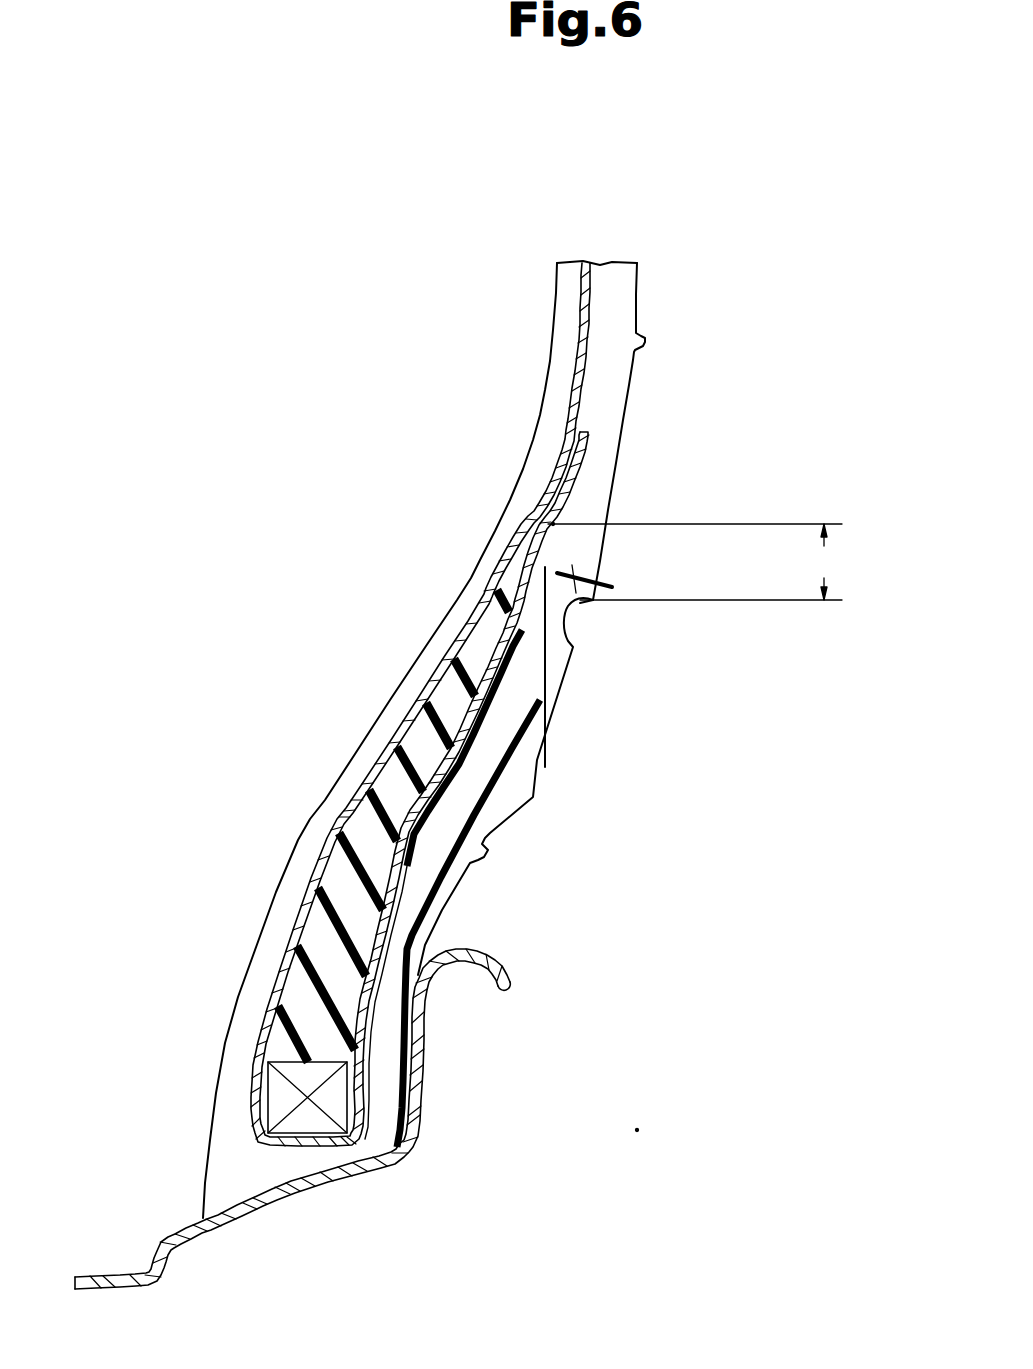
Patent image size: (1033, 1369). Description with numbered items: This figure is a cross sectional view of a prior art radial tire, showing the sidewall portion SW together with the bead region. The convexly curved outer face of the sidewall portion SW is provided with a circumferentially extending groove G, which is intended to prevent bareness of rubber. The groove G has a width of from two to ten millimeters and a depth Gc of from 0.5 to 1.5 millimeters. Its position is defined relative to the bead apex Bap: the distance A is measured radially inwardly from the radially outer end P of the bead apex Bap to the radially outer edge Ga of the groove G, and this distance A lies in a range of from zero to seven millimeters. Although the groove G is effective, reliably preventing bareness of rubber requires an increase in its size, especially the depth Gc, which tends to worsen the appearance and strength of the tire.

The sidewall portion SW is at (637, 308).
The radially outer end of bead apex P is at (553, 524).
The groove G is at (577, 617).
The depth of the groove Gc is at (587, 572).
The radially outer edge of the groove Ga is at (595, 601).
The distance A is at (695, 562).
The bead apex Bap is at (365, 843).